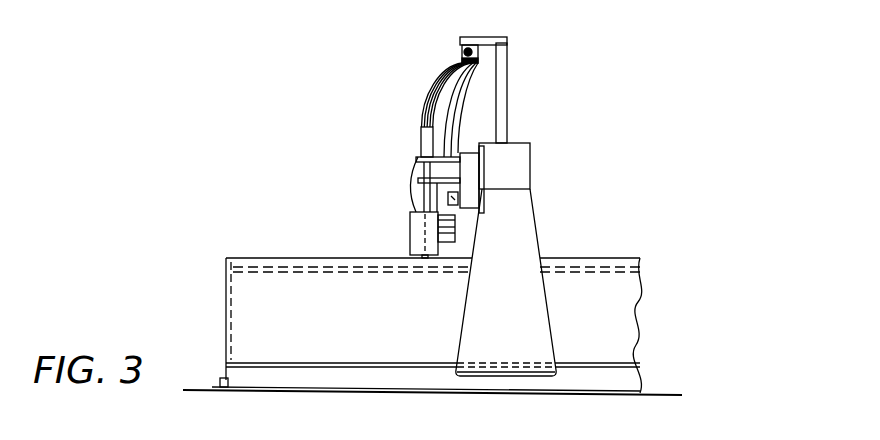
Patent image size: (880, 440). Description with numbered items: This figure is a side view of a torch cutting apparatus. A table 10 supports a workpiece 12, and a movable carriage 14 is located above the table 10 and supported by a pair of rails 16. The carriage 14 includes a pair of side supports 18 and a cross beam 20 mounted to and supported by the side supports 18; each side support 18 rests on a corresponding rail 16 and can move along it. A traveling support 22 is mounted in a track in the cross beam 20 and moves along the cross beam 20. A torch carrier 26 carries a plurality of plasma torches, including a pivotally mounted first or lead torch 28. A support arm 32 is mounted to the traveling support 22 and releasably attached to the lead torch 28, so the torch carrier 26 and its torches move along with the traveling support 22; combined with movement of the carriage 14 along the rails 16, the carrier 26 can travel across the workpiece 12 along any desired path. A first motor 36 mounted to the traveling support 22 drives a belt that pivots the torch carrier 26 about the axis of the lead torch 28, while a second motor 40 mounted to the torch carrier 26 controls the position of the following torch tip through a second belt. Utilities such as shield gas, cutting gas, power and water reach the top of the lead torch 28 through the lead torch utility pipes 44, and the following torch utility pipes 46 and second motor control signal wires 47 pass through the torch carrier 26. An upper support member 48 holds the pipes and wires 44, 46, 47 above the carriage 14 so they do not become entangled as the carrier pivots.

The table 10 is at (226, 323).
The workpiece 12 is at (353, 272).
The movable carriage 14 is at (580, 313).
The rails 16 is at (372, 380).
The side supports 18 is at (538, 204).
The cross beam 20 is at (531, 156).
The traveling support 22 is at (482, 146).
The torch carrier 26 is at (399, 229).
The lead torch 28 is at (426, 141).
The support arm 32 is at (464, 150).
The first motor 36 is at (455, 200).
The second motor 40 is at (450, 244).
The lead torch utility pipes 44 is at (444, 66).
The following torch utility pipes 46 is at (474, 72).
The second motor control signal wires 47 is at (468, 108).
The upper support member 48 is at (478, 37).